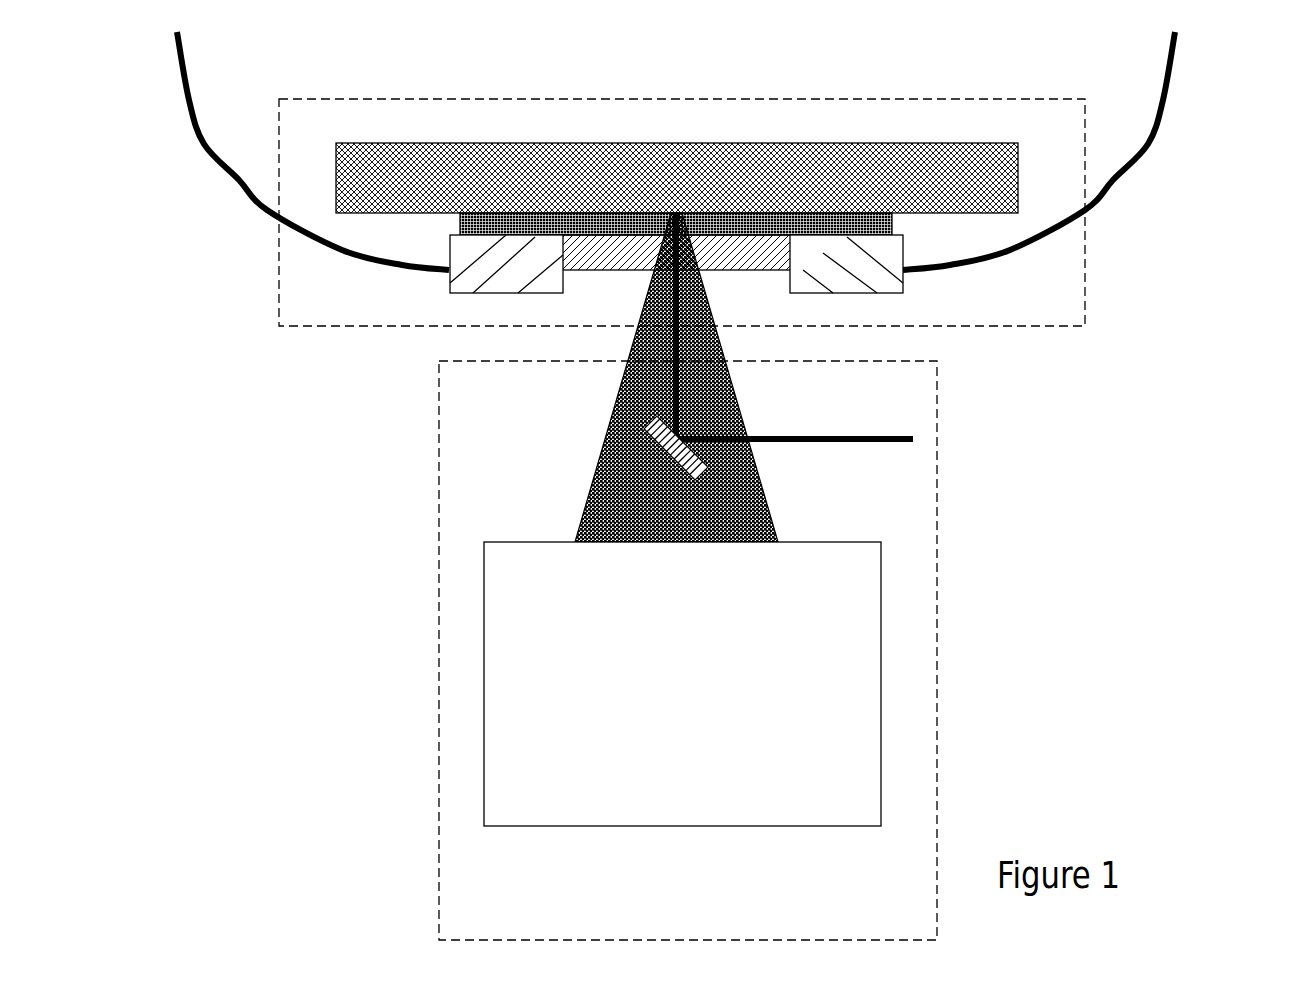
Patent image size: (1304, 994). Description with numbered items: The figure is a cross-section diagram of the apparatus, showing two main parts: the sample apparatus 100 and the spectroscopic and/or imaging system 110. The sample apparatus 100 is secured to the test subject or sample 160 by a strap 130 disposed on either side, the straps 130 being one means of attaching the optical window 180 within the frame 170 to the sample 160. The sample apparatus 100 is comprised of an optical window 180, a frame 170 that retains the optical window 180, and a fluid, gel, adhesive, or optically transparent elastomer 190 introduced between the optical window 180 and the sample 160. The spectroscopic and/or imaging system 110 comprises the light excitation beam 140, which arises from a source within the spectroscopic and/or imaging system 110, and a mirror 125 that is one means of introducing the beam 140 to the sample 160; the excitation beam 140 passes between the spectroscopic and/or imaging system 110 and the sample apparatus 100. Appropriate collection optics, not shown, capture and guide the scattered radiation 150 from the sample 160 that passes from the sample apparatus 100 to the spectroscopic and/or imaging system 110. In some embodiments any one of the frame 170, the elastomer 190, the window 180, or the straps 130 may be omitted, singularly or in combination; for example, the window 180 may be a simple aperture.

The sample apparatus 100 is at (1085, 235).
The spectroscopic and/or imaging system 110 is at (937, 542).
The mirror 125 is at (670, 455).
The strap 130 is at (1148, 144).
The light excitation beam 140 is at (913, 439).
The scattered radiation 150 is at (610, 417).
The sample 160 is at (380, 143).
The frame 170 is at (450, 280).
The optical window 180 is at (825, 252).
The fluid, gel, adhesive, or optically transparent elastomer 190 is at (460, 224).